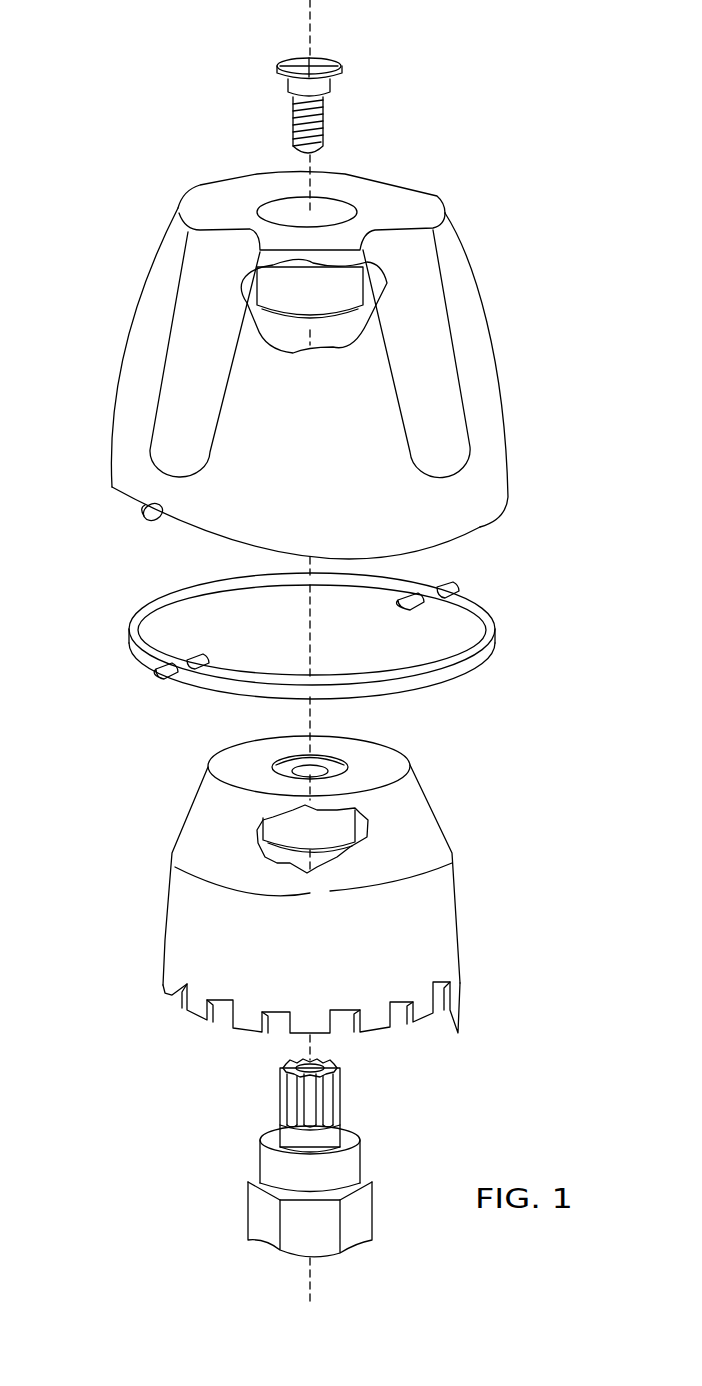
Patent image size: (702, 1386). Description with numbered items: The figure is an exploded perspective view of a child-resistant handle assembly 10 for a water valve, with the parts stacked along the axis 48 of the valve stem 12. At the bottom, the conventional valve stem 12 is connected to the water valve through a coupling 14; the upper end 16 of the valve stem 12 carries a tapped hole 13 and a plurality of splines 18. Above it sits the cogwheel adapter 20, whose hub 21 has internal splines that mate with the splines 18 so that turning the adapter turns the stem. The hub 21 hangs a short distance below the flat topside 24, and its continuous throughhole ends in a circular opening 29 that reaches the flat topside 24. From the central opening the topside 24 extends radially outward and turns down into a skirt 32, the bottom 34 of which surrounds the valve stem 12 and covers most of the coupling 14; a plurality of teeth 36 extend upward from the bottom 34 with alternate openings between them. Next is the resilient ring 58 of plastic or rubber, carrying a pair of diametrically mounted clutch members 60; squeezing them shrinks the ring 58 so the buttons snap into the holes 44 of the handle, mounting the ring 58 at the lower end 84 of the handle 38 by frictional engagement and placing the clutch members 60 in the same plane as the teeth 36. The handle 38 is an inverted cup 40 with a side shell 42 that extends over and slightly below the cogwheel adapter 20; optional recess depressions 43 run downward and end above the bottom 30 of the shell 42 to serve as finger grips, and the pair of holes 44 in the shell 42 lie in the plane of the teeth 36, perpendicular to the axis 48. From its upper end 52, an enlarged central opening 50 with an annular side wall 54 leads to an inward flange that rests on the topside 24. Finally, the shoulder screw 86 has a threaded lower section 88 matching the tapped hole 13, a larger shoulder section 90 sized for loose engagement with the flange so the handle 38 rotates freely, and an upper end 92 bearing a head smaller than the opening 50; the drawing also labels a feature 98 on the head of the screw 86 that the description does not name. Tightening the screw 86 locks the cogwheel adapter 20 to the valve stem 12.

The child-resistant handle assembly 10 is at (92, 160).
The valve stem 12 is at (328, 1151).
The tapped hole 13 is at (328, 1064).
The coupling 14 is at (362, 1213).
The upper end of the valve stem 16 is at (298, 1098).
The splines 18 is at (290, 1102).
The cogwheel adapter 20 is at (323, 882).
The hub 21 is at (287, 833).
The flat topside 24 is at (232, 762).
The circular opening 29 is at (332, 765).
The bottom of the shell 30 is at (472, 533).
The skirt 32 is at (418, 925).
The bottom of the skirt 34 is at (200, 1020).
The teeth 36 is at (427, 1012).
The handle 38 is at (330, 348).
The inverted cup 40 is at (500, 360).
The side shell 42 is at (488, 425).
The recess depressions 43 is at (432, 333).
The holes 44 is at (143, 514).
The axis 48 is at (312, 20).
The enlarged central opening 50 is at (333, 205).
The upper end of the handle 52 is at (200, 198).
The annular side wall 54 is at (330, 288).
The resilient ring 58 is at (317, 636).
The clutch member 60 is at (150, 673).
The lower end of the handle 84 is at (490, 485).
The shoulder screw 86 is at (321, 78).
The threaded lower section 88 is at (323, 113).
The shoulder section 90 is at (332, 88).
The upper end of the shoulder screw 92 is at (282, 73).
The slot in screw head 98 is at (297, 62).